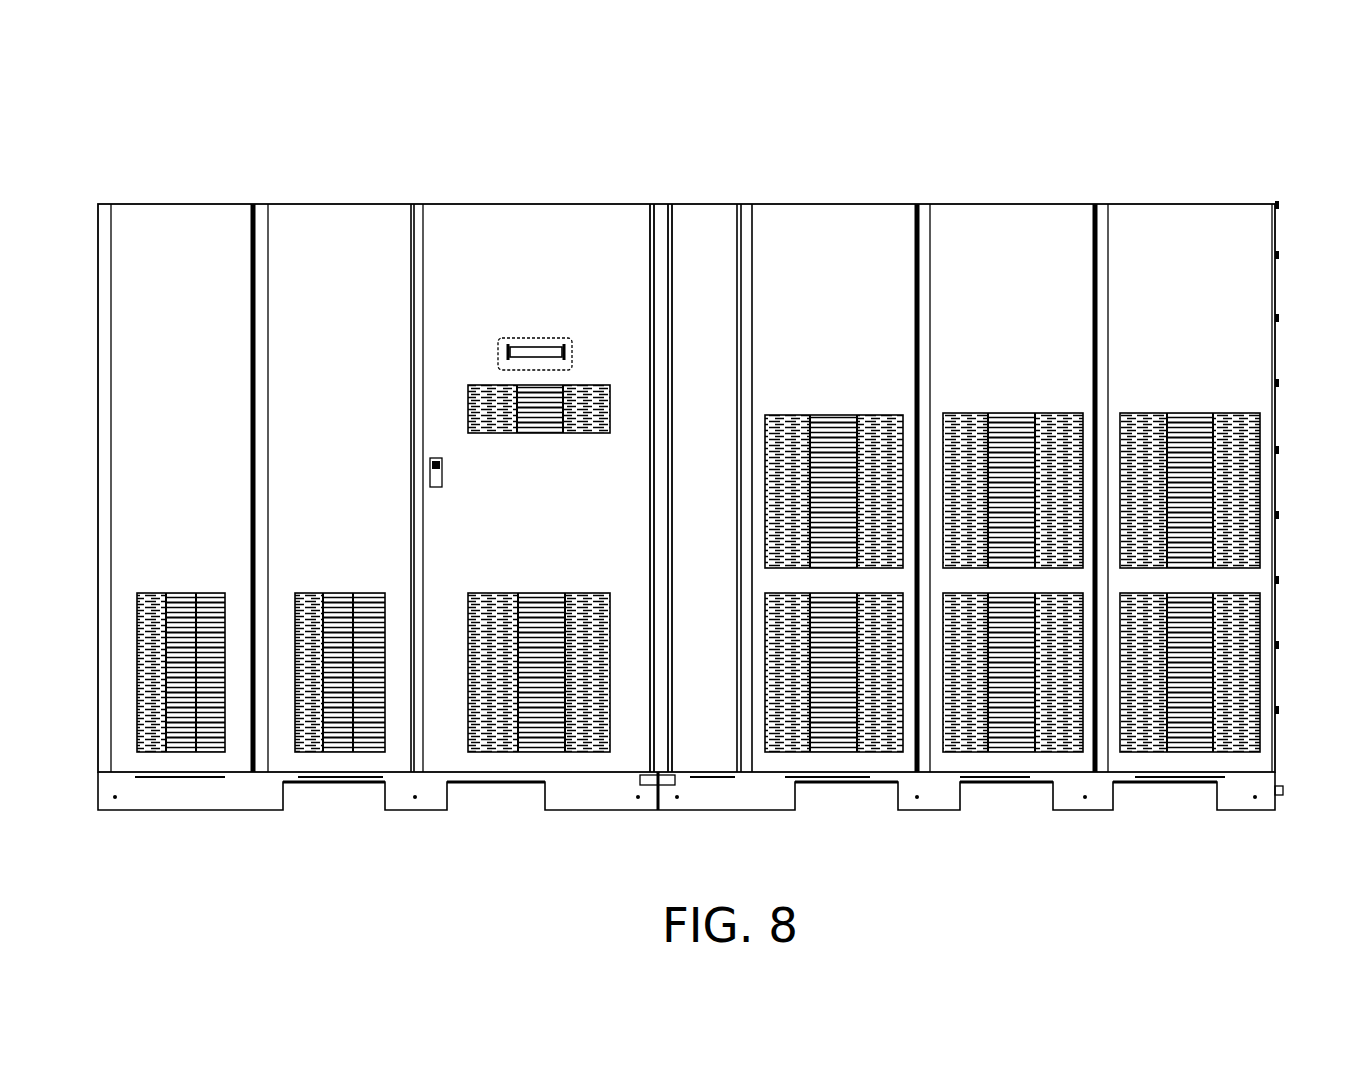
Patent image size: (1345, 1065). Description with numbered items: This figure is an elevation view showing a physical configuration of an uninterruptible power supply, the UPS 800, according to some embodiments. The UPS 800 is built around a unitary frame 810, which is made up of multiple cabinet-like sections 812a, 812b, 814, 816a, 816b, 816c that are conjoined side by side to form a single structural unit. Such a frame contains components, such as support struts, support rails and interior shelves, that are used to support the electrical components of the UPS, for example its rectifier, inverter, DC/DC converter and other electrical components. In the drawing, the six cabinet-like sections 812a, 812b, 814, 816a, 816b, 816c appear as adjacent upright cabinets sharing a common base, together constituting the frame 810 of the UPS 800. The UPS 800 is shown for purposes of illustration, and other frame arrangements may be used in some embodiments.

The UPS 800 is at (1170, 870).
The unitary frame 810 is at (1270, 122).
The cabinet-like section 812a is at (187, 212).
The cabinet-like section 812b is at (337, 212).
The cabinet-like section 814 is at (528, 212).
The cabinet-like section 816a is at (835, 212).
The cabinet-like section 816b is at (1020, 212).
The cabinet-like section 816c is at (1193, 212).